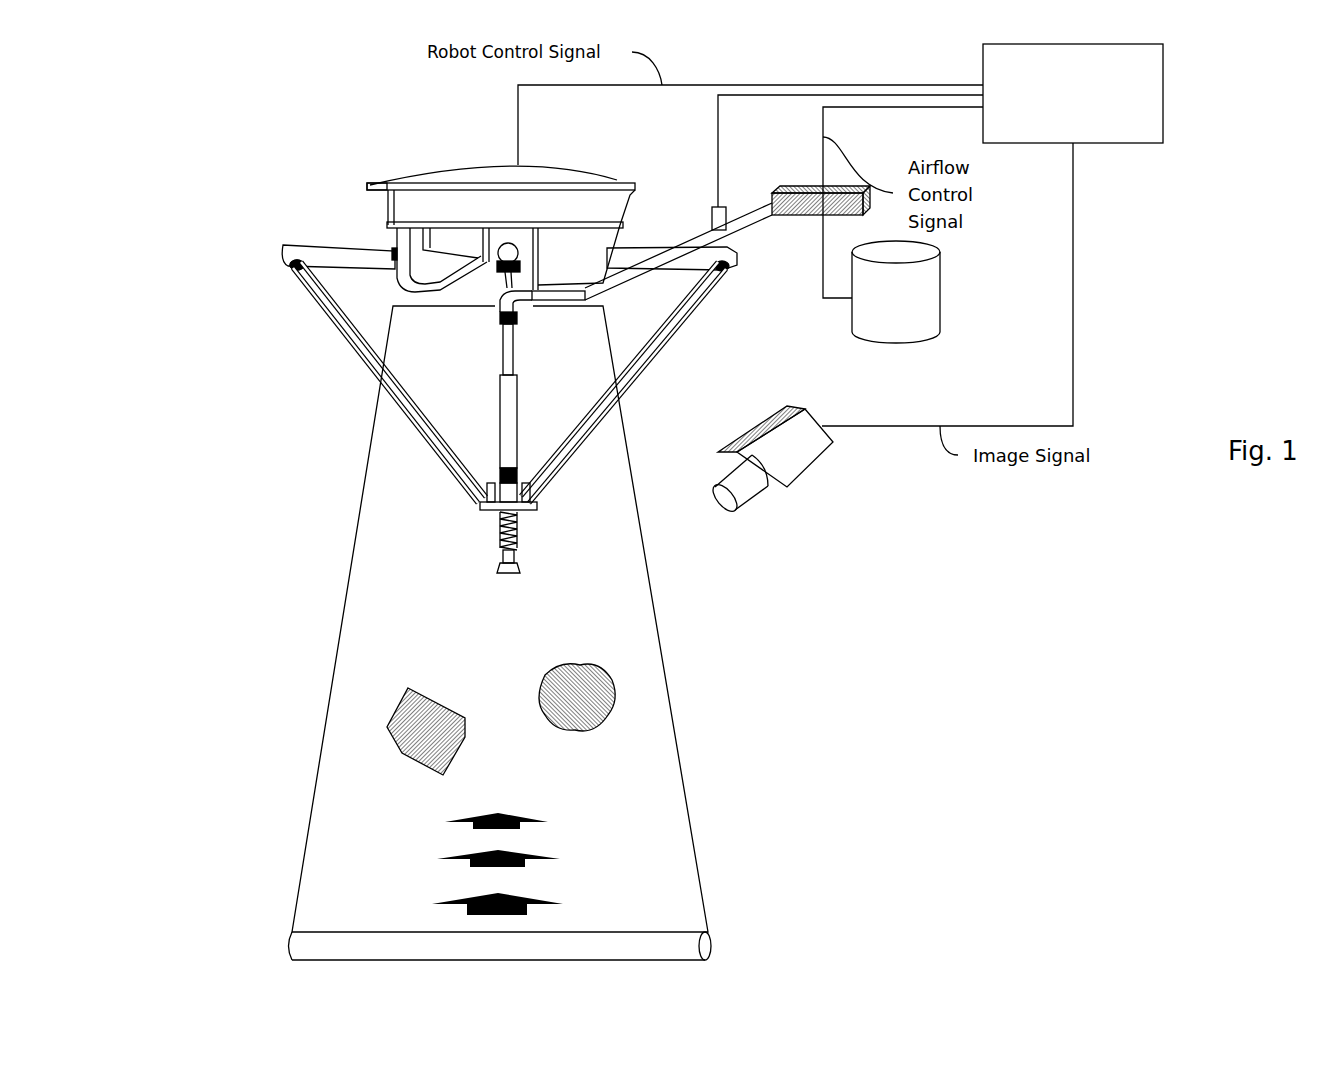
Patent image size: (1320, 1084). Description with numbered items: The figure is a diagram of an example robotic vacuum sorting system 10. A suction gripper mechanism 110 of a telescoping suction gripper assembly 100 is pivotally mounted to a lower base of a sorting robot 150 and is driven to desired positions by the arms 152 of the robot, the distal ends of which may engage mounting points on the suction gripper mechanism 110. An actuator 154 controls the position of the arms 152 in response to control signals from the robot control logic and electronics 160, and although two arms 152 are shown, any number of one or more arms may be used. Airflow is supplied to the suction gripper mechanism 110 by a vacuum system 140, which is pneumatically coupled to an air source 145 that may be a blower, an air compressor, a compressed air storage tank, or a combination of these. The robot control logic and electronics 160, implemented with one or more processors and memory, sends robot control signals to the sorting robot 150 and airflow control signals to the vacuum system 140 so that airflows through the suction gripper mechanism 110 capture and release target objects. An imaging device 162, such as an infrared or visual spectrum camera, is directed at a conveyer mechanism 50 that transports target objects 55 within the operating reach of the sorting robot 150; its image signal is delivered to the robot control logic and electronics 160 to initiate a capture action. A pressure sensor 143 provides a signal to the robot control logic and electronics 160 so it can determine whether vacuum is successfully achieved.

The robotic vacuum sorting system 10 is at (193, 157).
The conveyer mechanism 50 is at (660, 643).
The target objects 55 is at (417, 763).
The telescoping suction gripper assembly 100 is at (493, 442).
The suction gripper mechanism 110 is at (550, 542).
The vacuum system 140 is at (811, 173).
The pressure sensor 143 is at (713, 205).
The air source 145 is at (942, 293).
The sorting robot 150 is at (462, 202).
The arms 152 is at (347, 342).
The actuator 154 is at (387, 220).
The robot control logic and electronics 160 is at (1163, 92).
The imaging device 162 is at (810, 465).